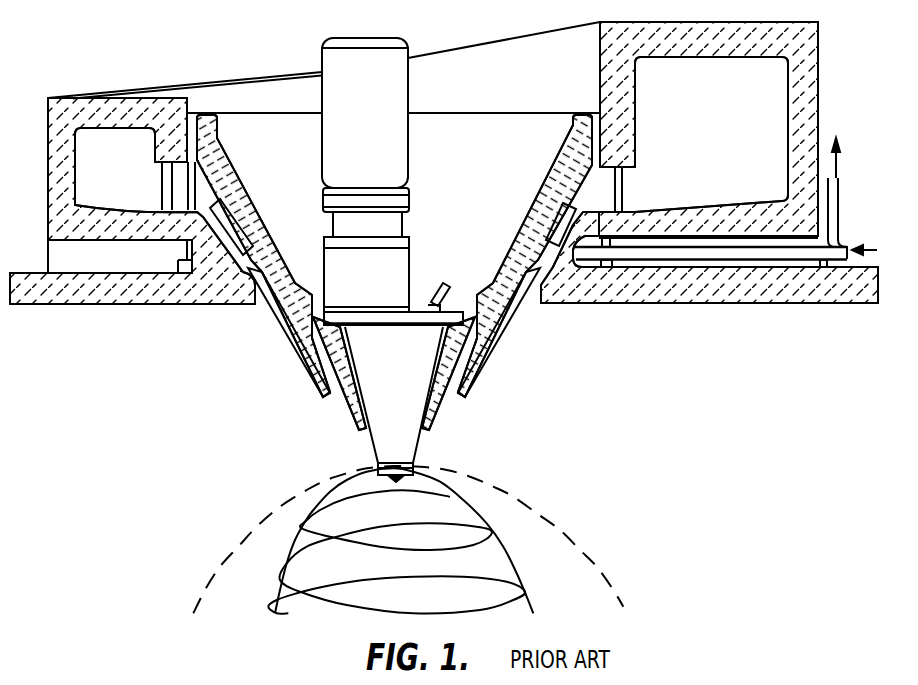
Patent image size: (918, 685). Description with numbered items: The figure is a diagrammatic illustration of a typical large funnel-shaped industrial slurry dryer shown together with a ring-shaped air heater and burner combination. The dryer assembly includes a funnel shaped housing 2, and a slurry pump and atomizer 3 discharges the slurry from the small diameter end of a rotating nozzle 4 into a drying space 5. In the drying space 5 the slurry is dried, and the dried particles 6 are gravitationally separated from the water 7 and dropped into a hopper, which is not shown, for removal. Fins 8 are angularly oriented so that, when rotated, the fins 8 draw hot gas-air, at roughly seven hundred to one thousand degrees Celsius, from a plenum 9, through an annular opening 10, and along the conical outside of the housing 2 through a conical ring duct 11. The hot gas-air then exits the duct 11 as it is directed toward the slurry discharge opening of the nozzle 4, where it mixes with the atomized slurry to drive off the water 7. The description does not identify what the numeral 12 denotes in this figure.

The funnel shaped housing 2 is at (437, 421).
The slurry pump and atomizer 3 is at (364, 162).
The rotating nozzle 4 is at (372, 444).
The drying space 5 is at (253, 425).
The dried particles 6 is at (593, 574).
The water 7 is at (282, 588).
The fins 8 is at (573, 265).
The plenum 9 is at (770, 91).
The annular opening 10 is at (622, 197).
The conical ring duct 11 is at (253, 281).
The rod 12 is at (828, 303).